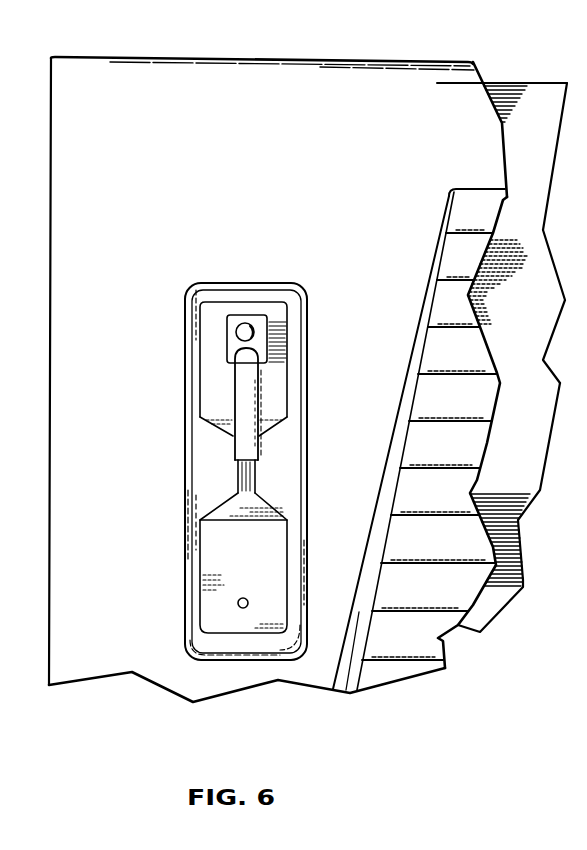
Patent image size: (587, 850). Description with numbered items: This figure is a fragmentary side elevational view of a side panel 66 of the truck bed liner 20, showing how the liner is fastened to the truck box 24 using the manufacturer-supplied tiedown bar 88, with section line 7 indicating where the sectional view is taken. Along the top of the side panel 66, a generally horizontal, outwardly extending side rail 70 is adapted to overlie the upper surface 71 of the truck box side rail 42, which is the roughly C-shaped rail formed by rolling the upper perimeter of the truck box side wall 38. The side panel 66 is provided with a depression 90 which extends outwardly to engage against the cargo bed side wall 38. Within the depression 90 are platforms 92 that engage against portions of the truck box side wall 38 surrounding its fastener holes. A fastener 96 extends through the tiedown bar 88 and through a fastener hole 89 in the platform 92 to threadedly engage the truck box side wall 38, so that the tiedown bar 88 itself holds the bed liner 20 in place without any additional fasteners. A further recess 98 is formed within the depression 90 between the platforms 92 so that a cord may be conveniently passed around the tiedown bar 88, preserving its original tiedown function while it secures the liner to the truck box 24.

The section line 7- 7 is at (233, 27).
The truck bed liner 20 is at (376, 45).
The truck box 24 is at (548, 340).
The side wall 38 is at (537, 505).
The side rail 42 is at (556, 140).
The side panel 66 is at (397, 683).
The side rail 70 is at (300, 62).
The upper surface 71 is at (529, 83).
The tiedown bar 88 is at (260, 447).
The fastener hole 89 is at (246, 598).
The depression 90 is at (307, 517).
The platform 92 is at (288, 378).
The fastener 96 is at (248, 325).
The recess 98 is at (256, 472).